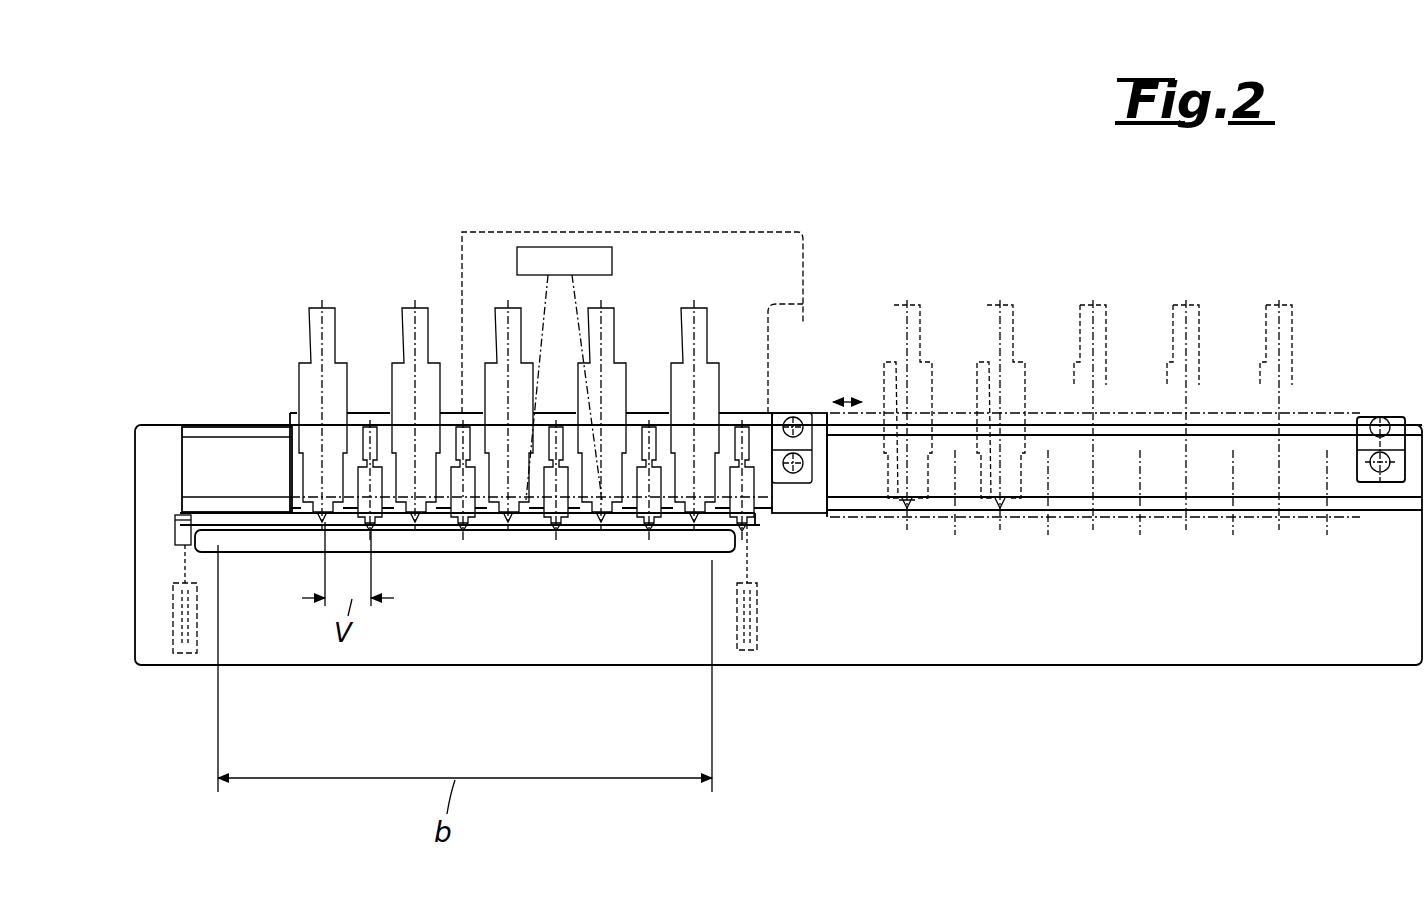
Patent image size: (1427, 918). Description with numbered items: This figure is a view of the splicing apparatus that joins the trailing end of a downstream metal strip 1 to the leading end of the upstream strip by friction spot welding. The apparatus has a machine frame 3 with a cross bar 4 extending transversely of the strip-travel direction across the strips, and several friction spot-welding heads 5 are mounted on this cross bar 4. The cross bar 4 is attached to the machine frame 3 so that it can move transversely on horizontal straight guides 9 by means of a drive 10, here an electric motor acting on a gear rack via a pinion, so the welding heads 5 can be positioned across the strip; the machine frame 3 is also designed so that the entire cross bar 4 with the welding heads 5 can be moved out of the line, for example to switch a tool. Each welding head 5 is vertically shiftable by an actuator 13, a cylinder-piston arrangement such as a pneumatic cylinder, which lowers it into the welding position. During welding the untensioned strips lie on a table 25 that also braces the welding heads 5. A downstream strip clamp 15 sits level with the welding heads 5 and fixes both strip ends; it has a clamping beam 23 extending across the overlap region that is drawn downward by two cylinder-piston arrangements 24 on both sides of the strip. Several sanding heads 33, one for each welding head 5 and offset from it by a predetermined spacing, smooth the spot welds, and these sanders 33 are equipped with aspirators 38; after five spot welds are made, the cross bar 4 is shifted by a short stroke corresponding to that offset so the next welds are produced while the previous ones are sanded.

The downstream metal strip 1 is at (530, 553).
The machine frame 3 is at (170, 420).
The cross bar 4 is at (290, 415).
The friction spot-welding heads 5 is at (690, 533).
The straight guides 9 is at (220, 500).
The drive 10 is at (803, 492).
The actuators 13 is at (414, 303).
The downstream strip clamp 15 is at (160, 525).
The clamping beam 23 is at (180, 520).
The cylinder-piston arrangements 24 is at (180, 660).
The table 25 is at (492, 557).
The sanding heads 33 is at (384, 537).
The aspirators 38 is at (613, 252).